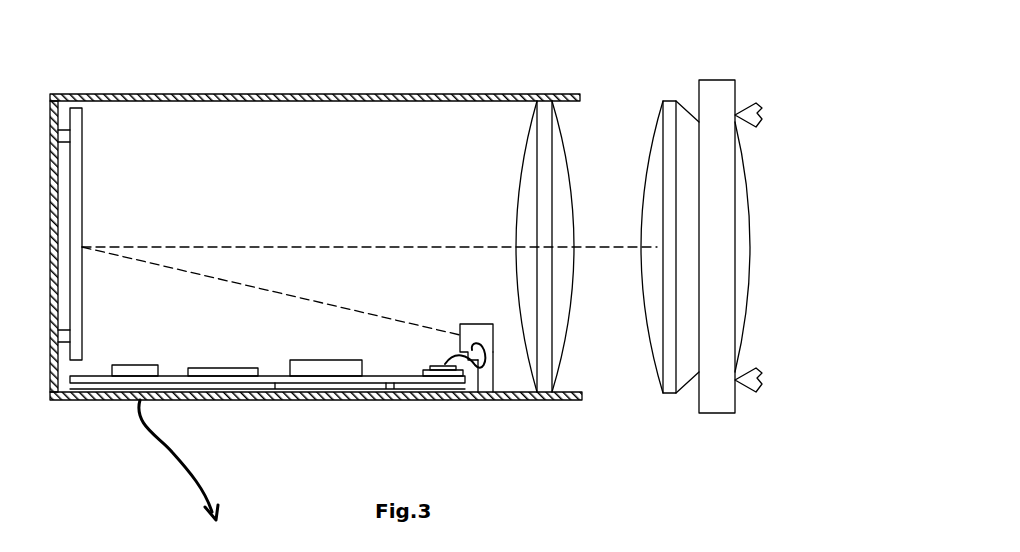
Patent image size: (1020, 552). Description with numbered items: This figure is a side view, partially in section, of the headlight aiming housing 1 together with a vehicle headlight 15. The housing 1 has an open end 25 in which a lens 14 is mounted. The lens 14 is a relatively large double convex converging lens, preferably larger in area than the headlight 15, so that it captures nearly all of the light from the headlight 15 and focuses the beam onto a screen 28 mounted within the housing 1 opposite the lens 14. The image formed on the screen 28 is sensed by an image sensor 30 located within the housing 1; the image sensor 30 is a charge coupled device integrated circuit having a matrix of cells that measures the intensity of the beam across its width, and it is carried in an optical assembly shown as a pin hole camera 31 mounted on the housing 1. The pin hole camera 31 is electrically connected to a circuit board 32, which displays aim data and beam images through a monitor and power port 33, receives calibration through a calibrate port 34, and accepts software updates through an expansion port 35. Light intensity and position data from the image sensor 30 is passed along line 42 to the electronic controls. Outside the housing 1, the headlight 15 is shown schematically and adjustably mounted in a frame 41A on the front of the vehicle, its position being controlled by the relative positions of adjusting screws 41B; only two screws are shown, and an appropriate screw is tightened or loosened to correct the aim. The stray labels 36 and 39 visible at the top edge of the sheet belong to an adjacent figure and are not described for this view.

The housing 1 is at (275, 95).
The lens 14 is at (572, 318).
The vehicle headlight 15 is at (647, 327).
The open end 25 is at (598, 122).
The screen 28 is at (82, 118).
The image sensor 30 is at (487, 338).
The pin hole camera 31 is at (495, 355).
The circuit board 32 is at (275, 401).
The monitor and power port 33 is at (150, 365).
The calibrate port 34 is at (236, 368).
The expansion port 35 is at (342, 360).
The element of adjacent figure 36 is at (87, 15).
The element of adjacent figure 39 is at (175, 4).
The frame 41A is at (717, 80).
The adjusting screws 41B is at (757, 110).
The line 42 is at (168, 452).